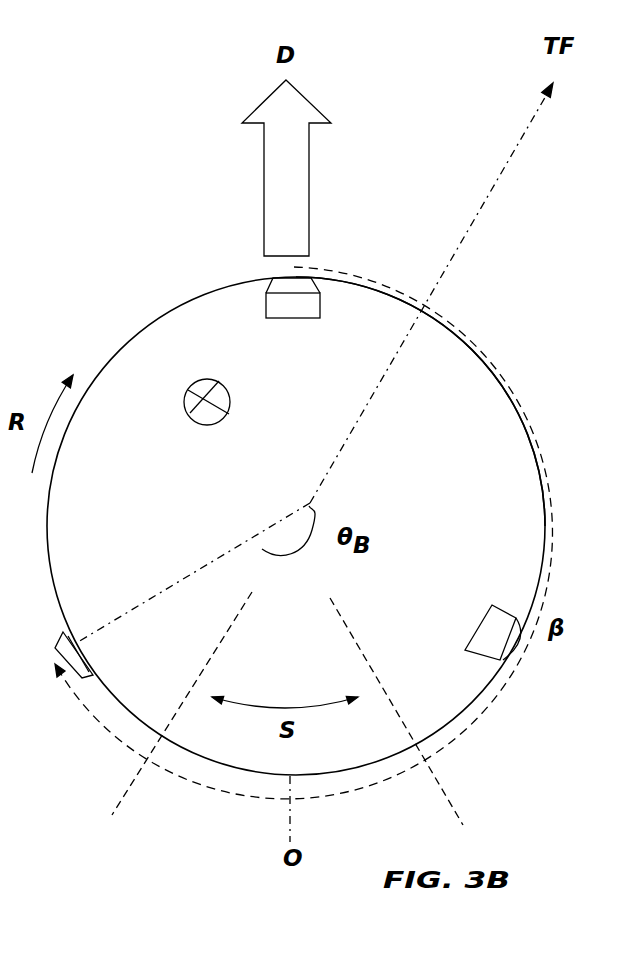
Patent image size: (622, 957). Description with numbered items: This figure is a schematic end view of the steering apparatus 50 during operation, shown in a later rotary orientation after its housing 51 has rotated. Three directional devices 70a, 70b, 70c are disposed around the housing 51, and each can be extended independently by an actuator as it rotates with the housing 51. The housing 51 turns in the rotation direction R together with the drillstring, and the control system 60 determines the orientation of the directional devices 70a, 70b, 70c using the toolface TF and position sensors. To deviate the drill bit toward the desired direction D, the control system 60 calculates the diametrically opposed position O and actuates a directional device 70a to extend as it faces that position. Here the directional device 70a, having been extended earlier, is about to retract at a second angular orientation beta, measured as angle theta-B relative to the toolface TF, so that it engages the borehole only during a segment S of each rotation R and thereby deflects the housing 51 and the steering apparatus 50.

The steering apparatus 50 is at (50, 341).
The housing 51 is at (468, 430).
The control system 60 is at (227, 417).
The directional device 70a is at (60, 662).
The directional device 70b is at (265, 303).
The directional device 70c is at (510, 652).